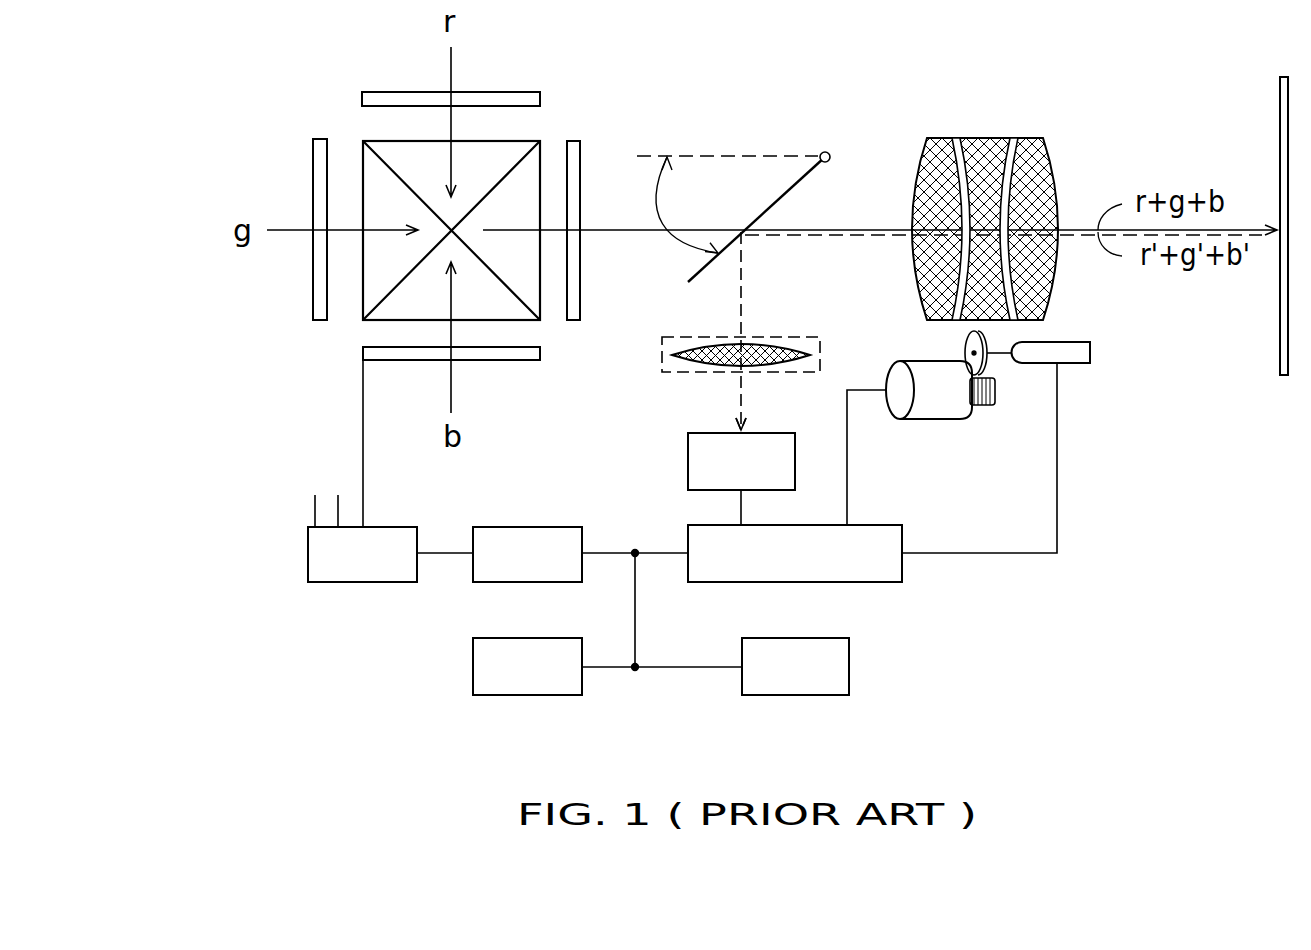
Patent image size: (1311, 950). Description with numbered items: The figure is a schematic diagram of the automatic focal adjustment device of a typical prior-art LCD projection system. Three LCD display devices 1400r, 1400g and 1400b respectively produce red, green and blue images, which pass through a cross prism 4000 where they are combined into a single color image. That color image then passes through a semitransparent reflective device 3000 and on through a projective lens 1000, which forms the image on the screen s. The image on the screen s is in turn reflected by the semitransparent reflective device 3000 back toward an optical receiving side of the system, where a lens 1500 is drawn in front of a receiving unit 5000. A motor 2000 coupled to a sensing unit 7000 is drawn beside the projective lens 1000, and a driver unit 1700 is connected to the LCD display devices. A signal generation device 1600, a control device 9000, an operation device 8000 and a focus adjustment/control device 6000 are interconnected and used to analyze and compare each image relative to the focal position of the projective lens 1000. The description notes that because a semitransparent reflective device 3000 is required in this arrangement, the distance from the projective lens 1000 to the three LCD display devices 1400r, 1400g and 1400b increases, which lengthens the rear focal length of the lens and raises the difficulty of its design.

The projective lens 1000 is at (990, 138).
The LCD display device (green) 1400g is at (321, 138).
The LCD display device (red) 1400r is at (520, 92).
The LCD display device (blue) 1400b is at (362, 346).
The cross prism 4000 is at (362, 140).
The semitransparent reflective device 3000 is at (690, 157).
The condensing lens 1500 is at (795, 337).
The photodetector 5000 is at (707, 433).
The motor 2000 is at (928, 420).
The position sensor 7000 is at (1072, 343).
The light valve driver 1700 is at (398, 527).
The signal generation device 1600 is at (562, 527).
The focus adjustment/control device 6000 is at (880, 525).
The control device 9000 is at (513, 638).
The operation device 8000 is at (828, 638).
The screen s is at (1278, 122).